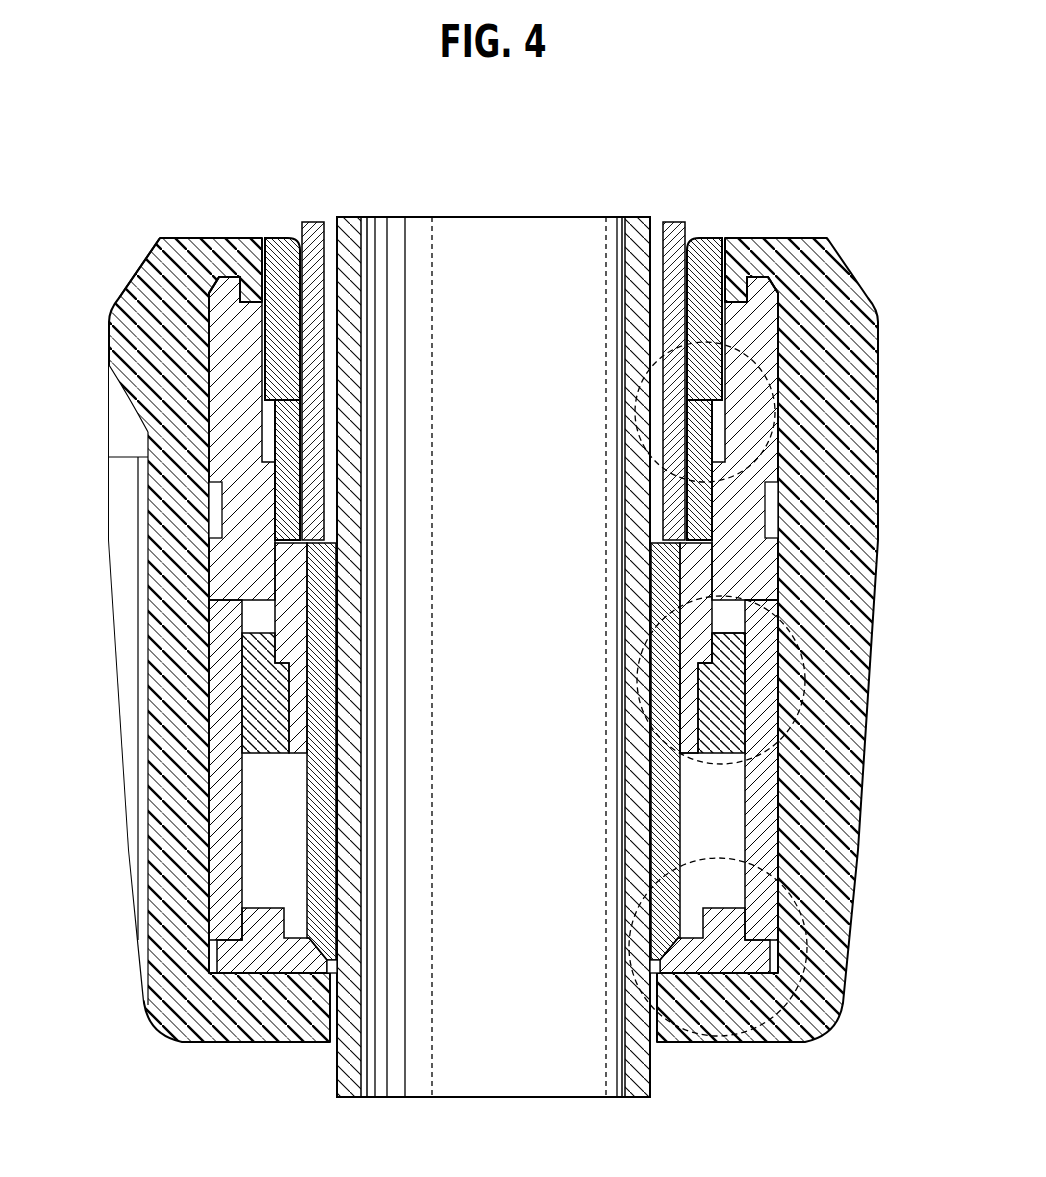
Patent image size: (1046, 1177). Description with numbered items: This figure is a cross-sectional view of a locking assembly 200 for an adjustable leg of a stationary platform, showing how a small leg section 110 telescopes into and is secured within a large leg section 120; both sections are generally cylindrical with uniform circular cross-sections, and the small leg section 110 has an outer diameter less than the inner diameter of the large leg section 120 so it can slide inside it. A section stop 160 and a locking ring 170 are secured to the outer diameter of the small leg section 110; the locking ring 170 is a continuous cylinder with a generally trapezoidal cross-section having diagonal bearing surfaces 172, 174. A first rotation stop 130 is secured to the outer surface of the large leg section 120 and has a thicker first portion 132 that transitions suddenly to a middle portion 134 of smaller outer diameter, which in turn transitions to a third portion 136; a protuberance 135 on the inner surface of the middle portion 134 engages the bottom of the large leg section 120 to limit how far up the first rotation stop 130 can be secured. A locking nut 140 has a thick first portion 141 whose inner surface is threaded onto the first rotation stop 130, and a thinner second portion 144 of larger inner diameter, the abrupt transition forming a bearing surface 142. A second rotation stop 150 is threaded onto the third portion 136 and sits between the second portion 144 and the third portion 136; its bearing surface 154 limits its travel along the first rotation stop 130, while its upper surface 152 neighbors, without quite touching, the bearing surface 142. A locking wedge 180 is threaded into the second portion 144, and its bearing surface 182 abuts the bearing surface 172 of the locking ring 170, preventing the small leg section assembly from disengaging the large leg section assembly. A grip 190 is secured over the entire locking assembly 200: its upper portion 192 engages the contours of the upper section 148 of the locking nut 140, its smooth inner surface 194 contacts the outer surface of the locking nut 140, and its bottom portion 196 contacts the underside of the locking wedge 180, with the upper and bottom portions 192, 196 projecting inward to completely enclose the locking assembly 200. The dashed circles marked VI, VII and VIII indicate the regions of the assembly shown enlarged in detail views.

The locking assembly 200 is at (245, 150).
The small leg section 110 is at (542, 1082).
The large leg section 120 is at (690, 262).
The first rotation stop 130 is at (760, 388).
The first portion 132 is at (733, 274).
The middle portion 134 is at (693, 491).
The protuberance 135 is at (688, 567).
The third portion 136 is at (690, 701).
The locking nut 140 is at (793, 325).
The first portion 141 is at (217, 350).
The bearing surface 142 is at (778, 602).
The second portion 144 is at (767, 803).
The upper section 148 is at (202, 295).
The second rotation stop 150 is at (730, 740).
The upper surface 152 is at (722, 668).
The bearing surface 154 is at (716, 692).
The section stop 160 is at (766, 514).
The locking ring 170 is at (690, 641).
The bearing surface 172 is at (664, 940).
The bearing surface 174 is at (703, 529).
The locking wedge 180 is at (716, 976).
The bearing surface 182 is at (690, 970).
The grip 190 is at (805, 488).
The upper portion 192 is at (226, 273).
The smooth inner surface 194 is at (248, 272).
The bottom portion 196 is at (780, 1043).
The detail view VI is at (818, 1030).
The detail view VII is at (795, 629).
The detail view VIII is at (873, 375).